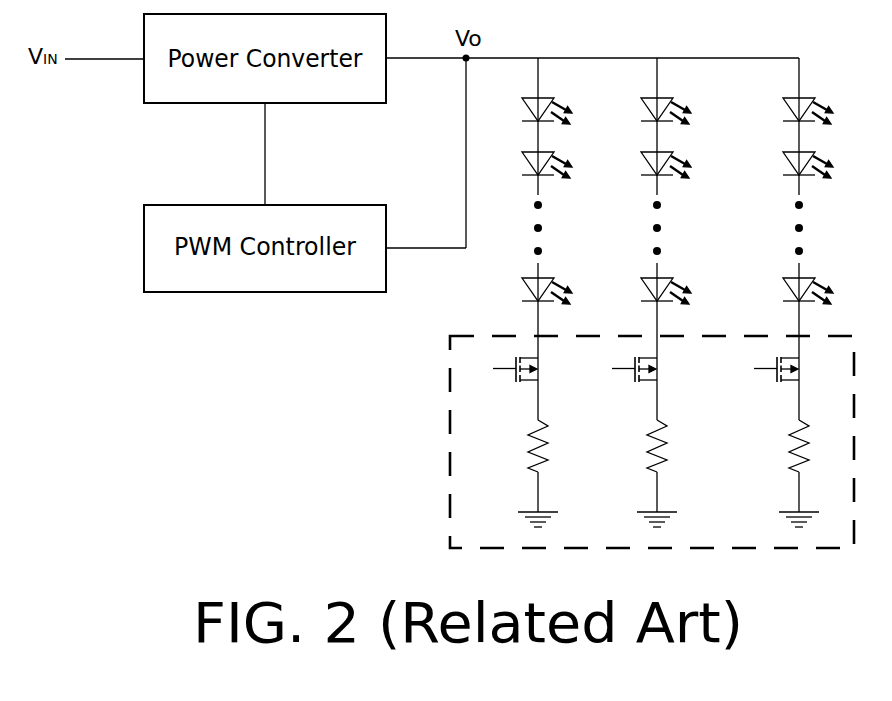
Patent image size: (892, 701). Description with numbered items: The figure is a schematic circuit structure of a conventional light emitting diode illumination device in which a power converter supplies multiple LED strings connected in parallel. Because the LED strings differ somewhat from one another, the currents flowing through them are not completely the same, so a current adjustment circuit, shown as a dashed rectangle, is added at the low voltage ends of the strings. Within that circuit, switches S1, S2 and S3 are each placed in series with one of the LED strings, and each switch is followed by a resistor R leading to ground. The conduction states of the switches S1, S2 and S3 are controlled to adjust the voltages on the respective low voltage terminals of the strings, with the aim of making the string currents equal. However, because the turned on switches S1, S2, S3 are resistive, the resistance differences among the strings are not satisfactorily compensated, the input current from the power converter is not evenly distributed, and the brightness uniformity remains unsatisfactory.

The switch S1 is at (501, 369).
The switch S2 is at (621, 369).
The switch S3 is at (762, 369).
The current sensing resistor R is at (656, 446).